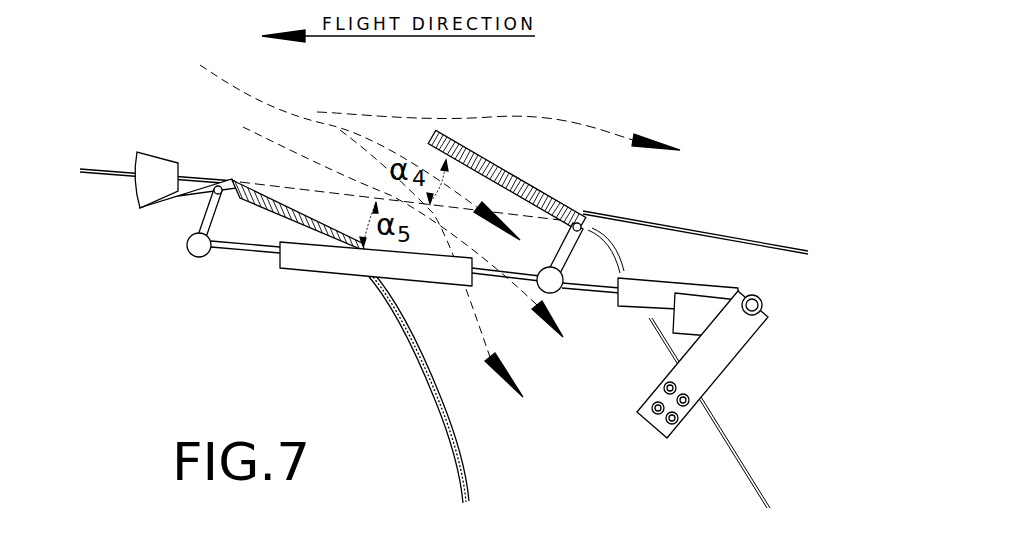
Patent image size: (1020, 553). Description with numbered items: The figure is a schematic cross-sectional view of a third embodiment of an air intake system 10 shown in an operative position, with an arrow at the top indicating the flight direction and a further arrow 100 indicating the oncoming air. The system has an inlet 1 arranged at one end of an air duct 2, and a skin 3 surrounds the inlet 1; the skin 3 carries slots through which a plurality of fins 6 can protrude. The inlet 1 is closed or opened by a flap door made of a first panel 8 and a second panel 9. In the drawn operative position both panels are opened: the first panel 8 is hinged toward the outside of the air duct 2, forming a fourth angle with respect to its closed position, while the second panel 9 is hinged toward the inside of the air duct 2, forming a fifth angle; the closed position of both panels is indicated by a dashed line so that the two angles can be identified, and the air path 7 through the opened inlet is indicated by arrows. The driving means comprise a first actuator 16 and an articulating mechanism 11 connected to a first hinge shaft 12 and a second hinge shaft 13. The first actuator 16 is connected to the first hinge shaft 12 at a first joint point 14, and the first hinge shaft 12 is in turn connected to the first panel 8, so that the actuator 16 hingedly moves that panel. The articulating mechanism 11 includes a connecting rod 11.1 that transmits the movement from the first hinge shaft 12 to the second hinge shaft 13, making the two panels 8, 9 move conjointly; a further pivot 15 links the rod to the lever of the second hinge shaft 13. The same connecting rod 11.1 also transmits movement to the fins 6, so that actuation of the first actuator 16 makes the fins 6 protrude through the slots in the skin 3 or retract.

The inlet 1 is at (328, 158).
The air duct 2 is at (484, 463).
The skin 3 is at (101, 170).
The fins 6 is at (136, 183).
The air flow through slot 7 is at (440, 395).
The first panel 8 is at (515, 172).
The second panel 9 is at (280, 213).
The air intake system 10 is at (594, 52).
The articulating mechanism 11 is at (322, 340).
The connecting rod 11.1 is at (297, 266).
The first hinge shaft 12 is at (603, 222).
The second hinge shaft 13 is at (200, 217).
The first joint point 14 is at (558, 291).
The pivot joint 15 is at (187, 245).
The first actuator 16 is at (786, 278).
The air flow direction 100 is at (572, 130).